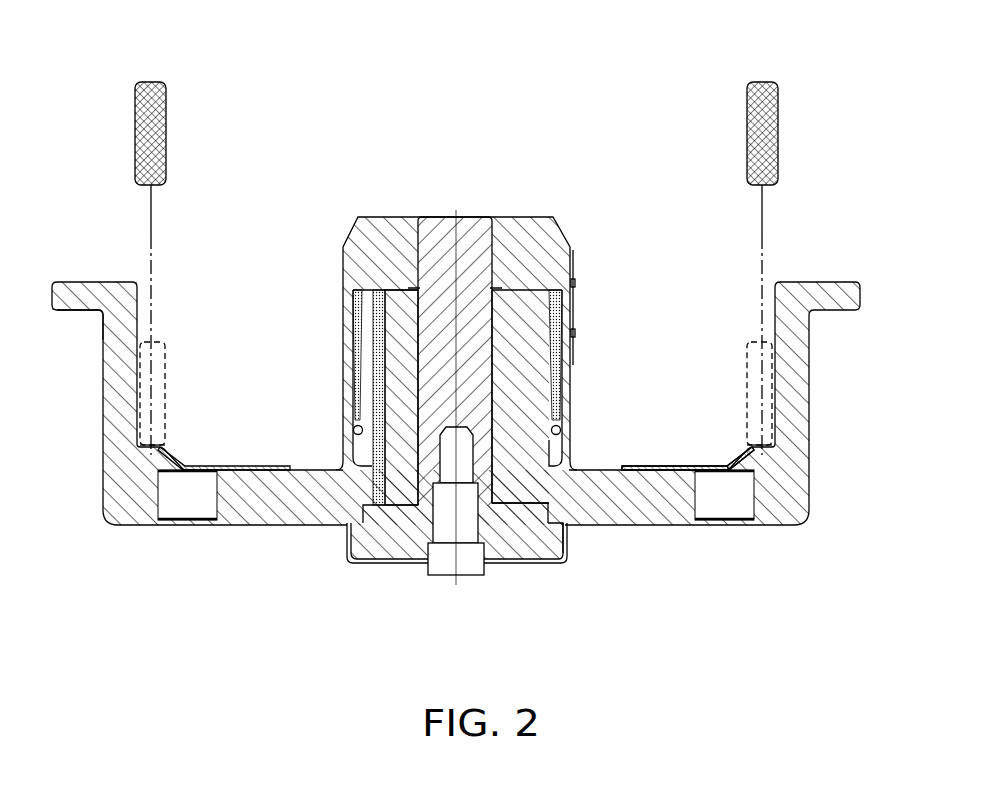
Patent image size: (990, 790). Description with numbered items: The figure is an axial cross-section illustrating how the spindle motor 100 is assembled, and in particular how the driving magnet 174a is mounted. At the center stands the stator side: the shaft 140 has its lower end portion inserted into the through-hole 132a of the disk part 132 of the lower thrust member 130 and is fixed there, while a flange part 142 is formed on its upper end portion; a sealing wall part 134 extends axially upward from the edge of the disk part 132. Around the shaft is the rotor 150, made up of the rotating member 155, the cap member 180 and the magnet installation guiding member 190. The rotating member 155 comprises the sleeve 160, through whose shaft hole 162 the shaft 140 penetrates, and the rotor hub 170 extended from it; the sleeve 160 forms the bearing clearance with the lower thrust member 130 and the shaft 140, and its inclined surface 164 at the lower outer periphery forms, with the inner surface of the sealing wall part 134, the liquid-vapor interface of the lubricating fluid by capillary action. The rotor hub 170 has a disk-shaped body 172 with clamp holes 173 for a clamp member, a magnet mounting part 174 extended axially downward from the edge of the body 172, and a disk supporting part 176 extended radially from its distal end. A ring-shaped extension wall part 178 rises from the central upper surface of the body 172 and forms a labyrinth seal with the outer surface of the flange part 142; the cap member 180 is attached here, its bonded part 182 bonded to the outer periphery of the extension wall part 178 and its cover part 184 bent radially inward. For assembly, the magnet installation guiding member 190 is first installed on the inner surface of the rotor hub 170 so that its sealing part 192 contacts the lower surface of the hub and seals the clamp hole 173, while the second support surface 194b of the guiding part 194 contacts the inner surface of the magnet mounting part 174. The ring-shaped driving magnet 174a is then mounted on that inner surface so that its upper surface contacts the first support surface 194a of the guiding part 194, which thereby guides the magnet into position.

The spindle motor 100 is at (846, 59).
The lower thrust member 130 is at (463, 313).
The disk part 132 is at (528, 232).
The through-hole 132a is at (478, 240).
The sealing wall part 134 is at (570, 244).
The shaft 140 is at (426, 232).
The flange part 142 is at (397, 550).
The rotor 150 is at (107, 542).
The rotating member 155 is at (270, 642).
The sleeve 160 is at (355, 478).
The shaft hole 162 is at (520, 413).
The inclined surface 164 is at (350, 345).
The rotor hub 170 is at (250, 611).
The body 172 is at (270, 478).
The clamp hole 173 is at (722, 510).
The magnet mounting part 174 is at (120, 410).
The driving magnet 174a is at (768, 140).
The disk supporting part 176 is at (68, 305).
The extension wall part 178 is at (552, 550).
The cap member 180 is at (433, 582).
The bonded part 182 is at (345, 548).
The cover part 184 is at (376, 560).
The magnet installation guiding member 190 is at (890, 550).
The sealing part 192 is at (783, 490).
The guiding part 194 is at (785, 462).
The first support surface 194a is at (752, 448).
The second support surface 194b is at (700, 469).